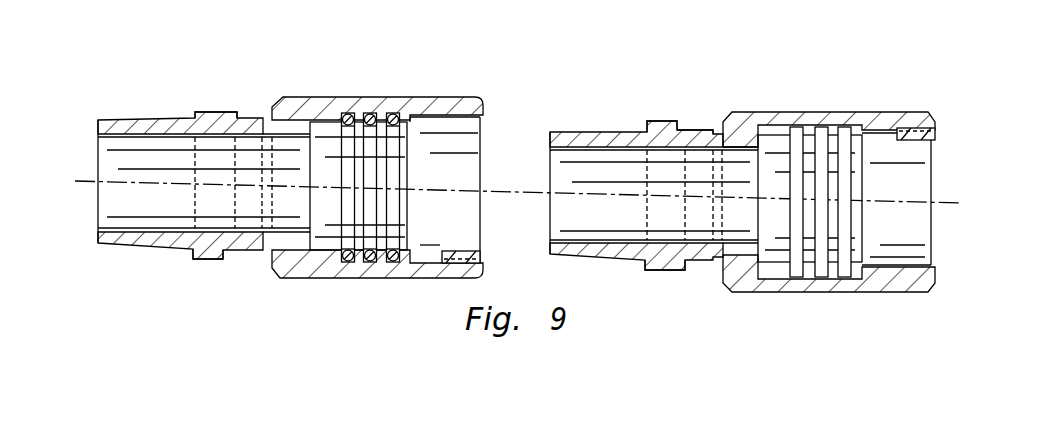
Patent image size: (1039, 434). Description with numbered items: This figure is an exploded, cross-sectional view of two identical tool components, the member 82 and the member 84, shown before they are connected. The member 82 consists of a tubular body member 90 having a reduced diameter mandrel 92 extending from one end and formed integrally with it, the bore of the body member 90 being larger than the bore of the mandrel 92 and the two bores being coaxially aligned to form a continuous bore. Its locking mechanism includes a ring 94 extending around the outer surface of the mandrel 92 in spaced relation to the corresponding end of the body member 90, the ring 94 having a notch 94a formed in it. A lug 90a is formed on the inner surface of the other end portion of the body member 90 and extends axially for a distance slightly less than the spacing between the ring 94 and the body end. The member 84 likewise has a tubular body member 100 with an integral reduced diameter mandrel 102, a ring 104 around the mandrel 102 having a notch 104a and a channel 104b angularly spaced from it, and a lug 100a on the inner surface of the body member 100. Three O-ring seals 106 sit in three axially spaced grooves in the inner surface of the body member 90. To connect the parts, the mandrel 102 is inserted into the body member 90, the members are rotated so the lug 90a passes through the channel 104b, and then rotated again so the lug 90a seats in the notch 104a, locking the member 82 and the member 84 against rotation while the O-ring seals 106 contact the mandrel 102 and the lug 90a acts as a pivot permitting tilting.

The member 82 is at (250, 74).
The member 84 is at (764, 74).
The tubular body member 90 is at (314, 93).
The lug 90a is at (468, 256).
The mandrel 92 is at (136, 116).
The ring 94 is at (218, 112).
The notch 94a is at (221, 260).
The tubular body member 100 is at (897, 107).
The lug 100a is at (925, 141).
The mandrel 102 is at (585, 126).
The ring 104 is at (665, 121).
The notch 104a is at (680, 125).
The channel 104b is at (668, 271).
The O-ring seals 106 is at (346, 113).